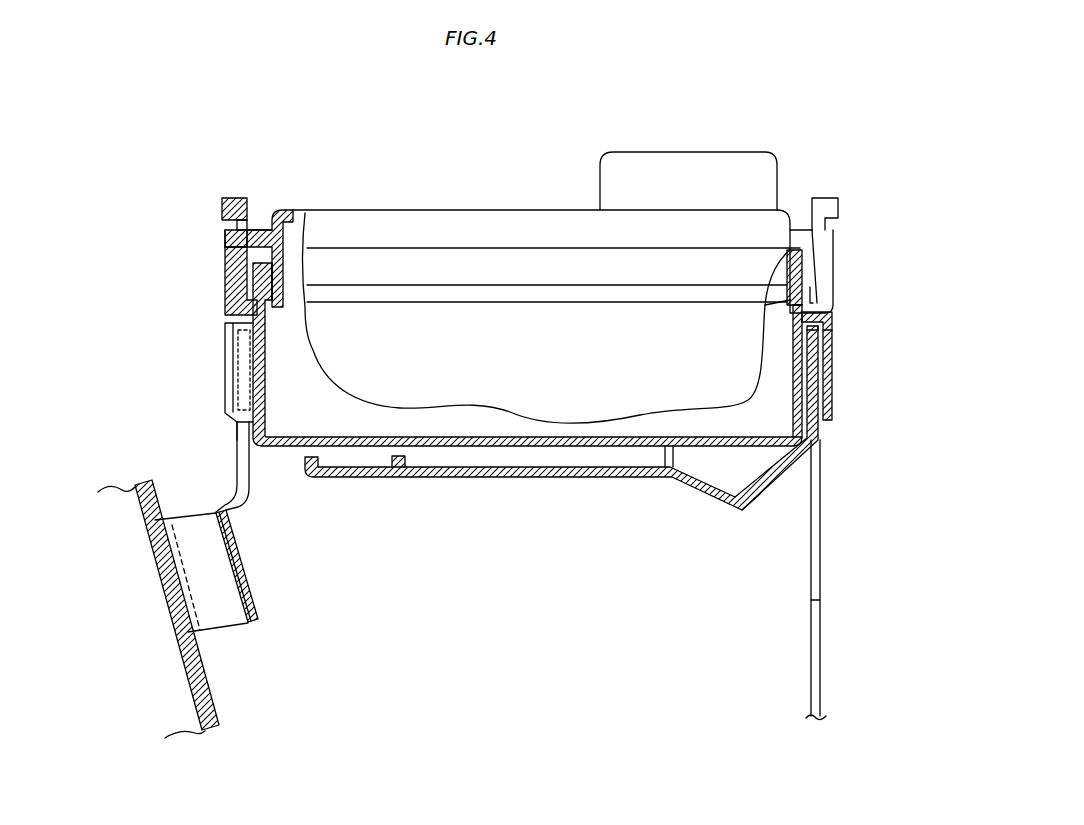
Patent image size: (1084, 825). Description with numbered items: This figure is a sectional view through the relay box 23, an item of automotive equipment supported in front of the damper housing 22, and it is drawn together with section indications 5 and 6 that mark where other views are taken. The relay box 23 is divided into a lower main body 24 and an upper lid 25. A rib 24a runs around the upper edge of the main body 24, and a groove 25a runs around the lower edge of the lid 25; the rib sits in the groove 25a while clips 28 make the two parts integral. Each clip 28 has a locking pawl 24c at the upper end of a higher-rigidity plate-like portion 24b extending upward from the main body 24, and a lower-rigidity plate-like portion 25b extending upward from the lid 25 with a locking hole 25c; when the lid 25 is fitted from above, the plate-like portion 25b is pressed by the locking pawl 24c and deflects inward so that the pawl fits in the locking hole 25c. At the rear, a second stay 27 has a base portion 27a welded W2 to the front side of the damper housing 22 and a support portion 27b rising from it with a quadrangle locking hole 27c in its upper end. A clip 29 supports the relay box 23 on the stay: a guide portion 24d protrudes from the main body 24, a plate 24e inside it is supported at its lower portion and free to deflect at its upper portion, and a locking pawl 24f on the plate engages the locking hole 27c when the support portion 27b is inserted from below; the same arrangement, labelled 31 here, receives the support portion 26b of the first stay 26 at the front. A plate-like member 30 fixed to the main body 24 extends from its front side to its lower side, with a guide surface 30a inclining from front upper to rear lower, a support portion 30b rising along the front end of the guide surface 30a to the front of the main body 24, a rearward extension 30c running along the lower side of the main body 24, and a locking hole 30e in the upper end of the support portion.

The damper housing 22 is at (210, 697).
The relay box 23 is at (508, 205).
The main body 24 is at (558, 452).
The rib 24a is at (278, 287).
The plate-like portion 24b is at (228, 283).
The locking pawl 24c is at (226, 240).
The guide portion 24d is at (832, 336).
The plate 24e is at (800, 332).
The locking pawl 24f is at (828, 366).
The lid 25 is at (403, 205).
The groove 25a is at (790, 302).
The plate-like portion 25b is at (238, 200).
The locking hole 25c is at (250, 228).
The first stay 26 is at (824, 548).
The support portion 26b is at (811, 600).
The second stay 27 is at (256, 500).
The base portion 27a is at (215, 583).
The support portion 27b is at (236, 441).
The locking hole 27c is at (243, 345).
The clip 28 is at (214, 208).
The clip 29 is at (218, 362).
The plate-like member 30 is at (614, 481).
The guide surface 30a is at (786, 500).
The support portion 30b is at (830, 390).
The rearward extension 30c is at (424, 478).
The locking hole 30e is at (771, 421).
The engagement structure 31 is at (842, 358).
The weld W2 is at (170, 518).
The section line 5 is at (798, 160).
The view direction 6 is at (520, 555).